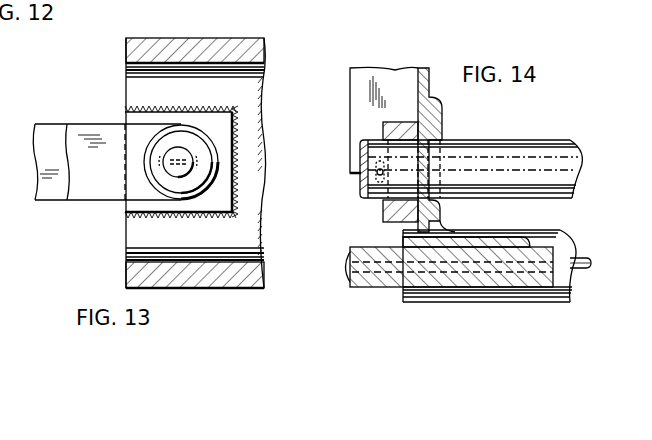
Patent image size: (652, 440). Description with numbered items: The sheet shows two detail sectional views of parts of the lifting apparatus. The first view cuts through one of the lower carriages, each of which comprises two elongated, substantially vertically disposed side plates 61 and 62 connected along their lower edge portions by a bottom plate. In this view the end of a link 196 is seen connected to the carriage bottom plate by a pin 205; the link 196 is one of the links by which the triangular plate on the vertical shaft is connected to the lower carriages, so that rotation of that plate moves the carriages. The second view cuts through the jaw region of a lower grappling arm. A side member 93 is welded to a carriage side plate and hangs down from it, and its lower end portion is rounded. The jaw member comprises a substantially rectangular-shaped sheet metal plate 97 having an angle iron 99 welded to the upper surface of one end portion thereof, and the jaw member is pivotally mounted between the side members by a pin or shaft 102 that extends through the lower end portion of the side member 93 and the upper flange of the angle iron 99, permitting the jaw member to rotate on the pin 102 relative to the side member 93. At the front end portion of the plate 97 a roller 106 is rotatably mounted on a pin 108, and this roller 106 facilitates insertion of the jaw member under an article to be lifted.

In FIG. 13, the side plate 61 is at (216, 273).
In FIG. 13, the side plate 62 is at (165, 48).
In FIG. 13, the link 196 is at (104, 133).
In FIG. 13, the pin 205 is at (177, 157).
In FIG. 14, the side member 93 is at (360, 114).
In FIG. 14, the rectangular-shaped plate 97 is at (388, 278).
In FIG. 14, the angle iron 99 is at (441, 112).
In FIG. 14, the pin or shaft 102 is at (493, 150).
In FIG. 14, the roller 106 is at (552, 230).
In FIG. 14, the pin 108 is at (580, 258).